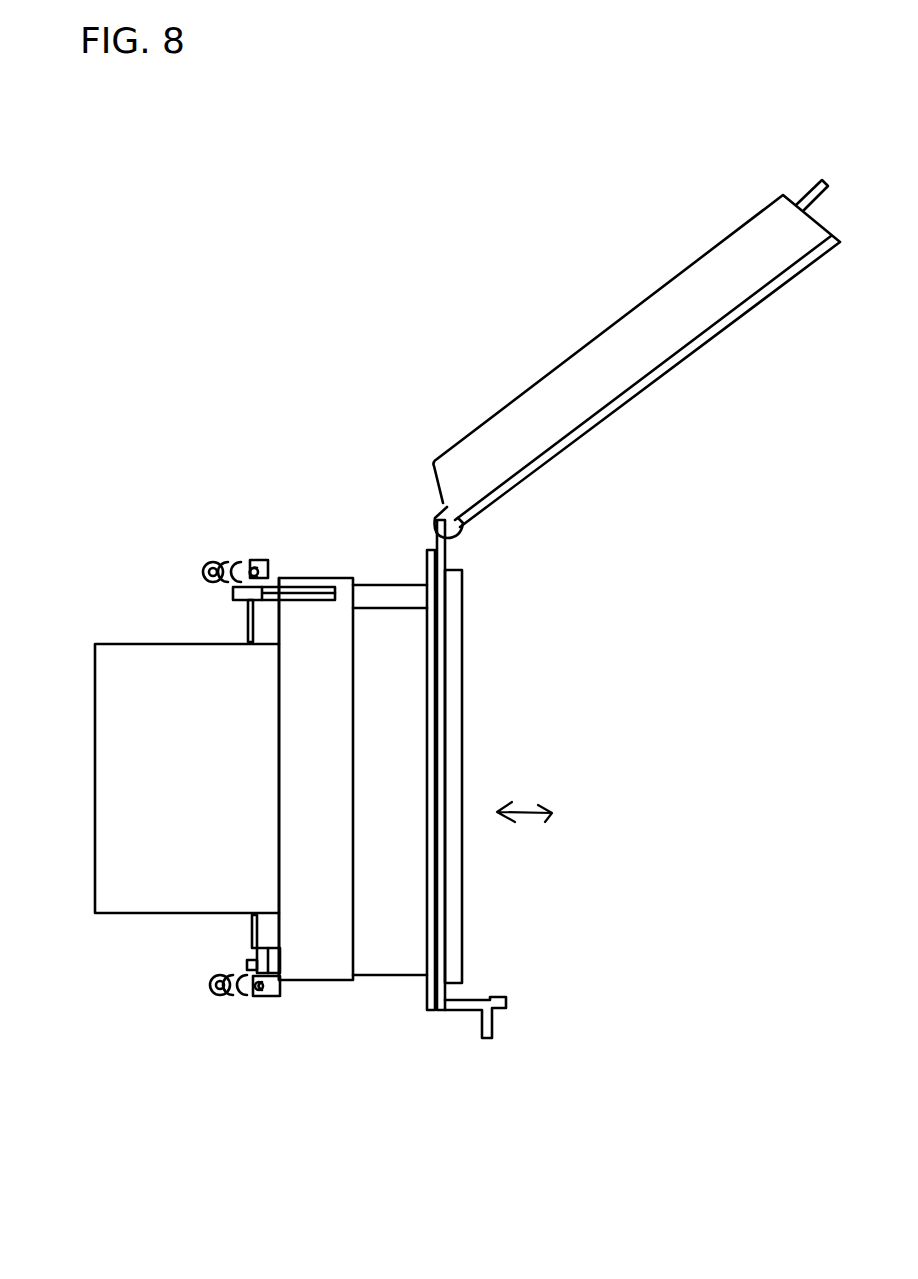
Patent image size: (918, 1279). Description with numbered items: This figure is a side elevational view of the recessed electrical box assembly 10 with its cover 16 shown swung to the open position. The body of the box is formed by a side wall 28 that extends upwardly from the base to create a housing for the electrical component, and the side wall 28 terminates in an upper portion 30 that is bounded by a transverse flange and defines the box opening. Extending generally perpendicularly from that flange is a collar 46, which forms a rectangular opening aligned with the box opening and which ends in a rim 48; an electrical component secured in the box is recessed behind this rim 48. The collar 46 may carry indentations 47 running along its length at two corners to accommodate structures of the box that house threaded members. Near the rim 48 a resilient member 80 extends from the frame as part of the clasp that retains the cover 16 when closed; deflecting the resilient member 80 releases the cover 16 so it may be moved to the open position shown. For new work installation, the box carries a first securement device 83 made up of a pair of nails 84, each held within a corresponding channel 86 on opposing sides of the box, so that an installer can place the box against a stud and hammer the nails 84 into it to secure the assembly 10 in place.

The recessed electrical box assembly 10 is at (240, 378).
The cover 16 is at (548, 387).
The side wall 28 is at (188, 712).
The upper portion 30 is at (276, 661).
The collar 46 is at (305, 963).
The indentations 47 is at (400, 590).
The rim 48 is at (353, 980).
The resilient member 80 is at (507, 1003).
The first securement device 83 is at (227, 973).
The nails 84 is at (222, 562).
The channel 86 is at (256, 565).